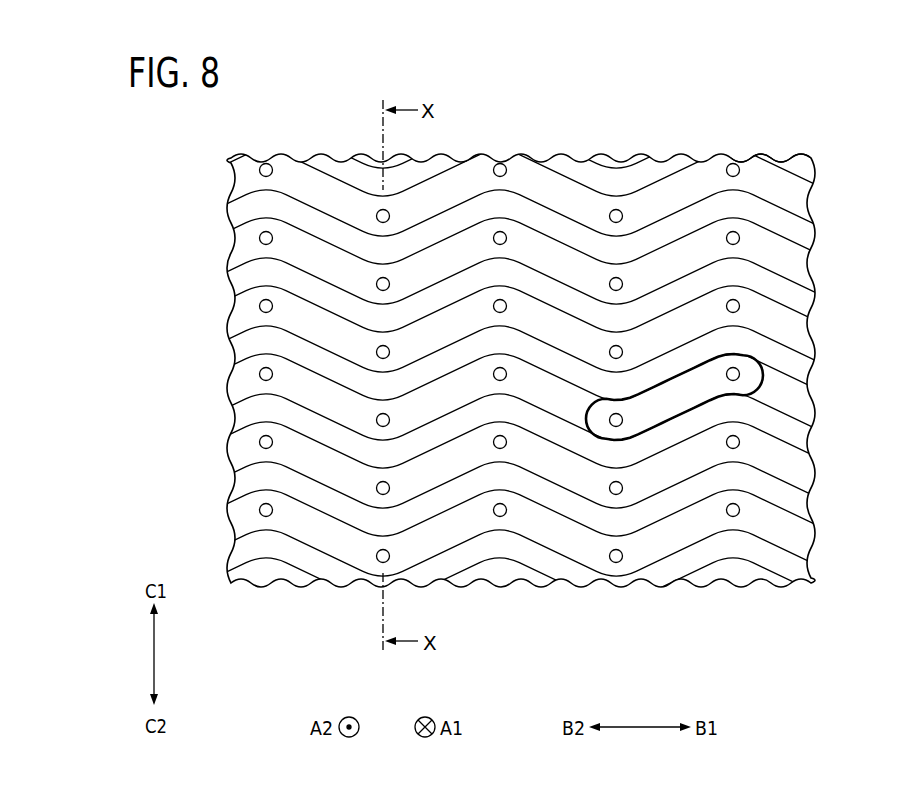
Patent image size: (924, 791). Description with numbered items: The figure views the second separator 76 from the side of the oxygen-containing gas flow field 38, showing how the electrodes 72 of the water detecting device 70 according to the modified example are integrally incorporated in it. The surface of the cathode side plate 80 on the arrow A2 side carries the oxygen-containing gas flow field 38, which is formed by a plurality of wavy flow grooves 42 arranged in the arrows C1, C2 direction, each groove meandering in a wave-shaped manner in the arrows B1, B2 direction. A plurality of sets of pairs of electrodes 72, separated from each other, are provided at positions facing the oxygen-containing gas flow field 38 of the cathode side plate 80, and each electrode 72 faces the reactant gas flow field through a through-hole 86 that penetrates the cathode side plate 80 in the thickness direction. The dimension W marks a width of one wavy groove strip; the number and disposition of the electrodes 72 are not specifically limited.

The water detecting device 70 is at (548, 138).
The second separator 76 is at (785, 157).
The oxygen-containing gas flow field 38 is at (772, 249).
The wavy flow grooves 42 is at (786, 265).
The through-hole 86 is at (733, 307).
The electrodes 72 is at (266, 306).
The width of strip W is at (752, 388).
The cathode side plate 80 is at (792, 540).